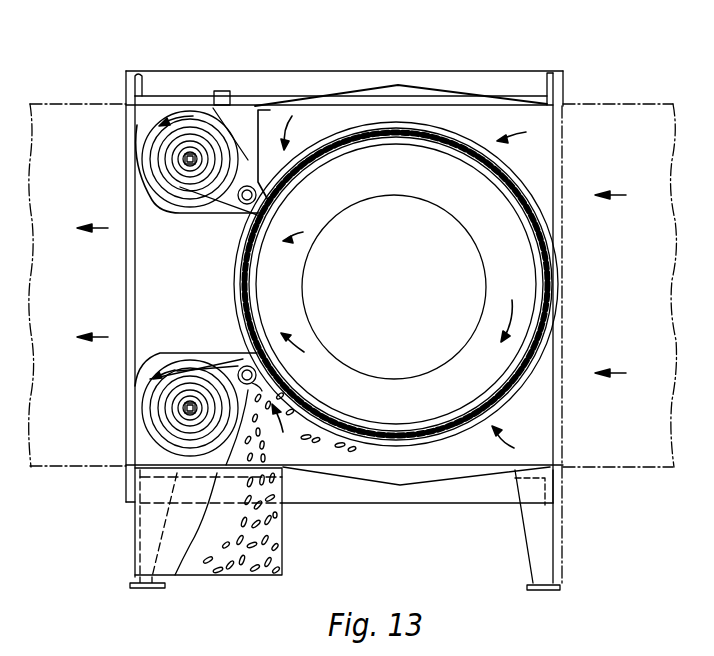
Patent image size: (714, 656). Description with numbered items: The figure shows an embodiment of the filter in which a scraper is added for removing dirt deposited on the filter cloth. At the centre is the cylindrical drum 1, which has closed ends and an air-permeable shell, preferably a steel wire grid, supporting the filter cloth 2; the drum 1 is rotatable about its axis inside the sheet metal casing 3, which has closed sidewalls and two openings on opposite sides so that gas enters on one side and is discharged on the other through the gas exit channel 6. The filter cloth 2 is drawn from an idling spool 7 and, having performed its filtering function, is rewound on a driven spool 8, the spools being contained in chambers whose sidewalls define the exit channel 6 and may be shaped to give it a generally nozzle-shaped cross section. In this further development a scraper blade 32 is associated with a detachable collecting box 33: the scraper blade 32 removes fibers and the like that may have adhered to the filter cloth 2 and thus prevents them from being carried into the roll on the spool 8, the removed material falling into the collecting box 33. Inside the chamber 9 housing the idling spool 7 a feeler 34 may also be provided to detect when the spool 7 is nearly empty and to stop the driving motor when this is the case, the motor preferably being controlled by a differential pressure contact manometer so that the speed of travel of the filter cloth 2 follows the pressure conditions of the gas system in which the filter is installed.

The cylindrical drum 1 is at (550, 304).
The filter cloth 2 is at (549, 253).
The casing 3 is at (372, 92).
The gas exit channel 6 is at (184, 296).
The idling spool 7 is at (182, 118).
The driven spool 8 is at (150, 415).
The chamber 9 is at (143, 128).
The scraper blade 32 is at (244, 366).
The detachable collecting box 33 is at (222, 548).
The feeler 34 is at (228, 118).